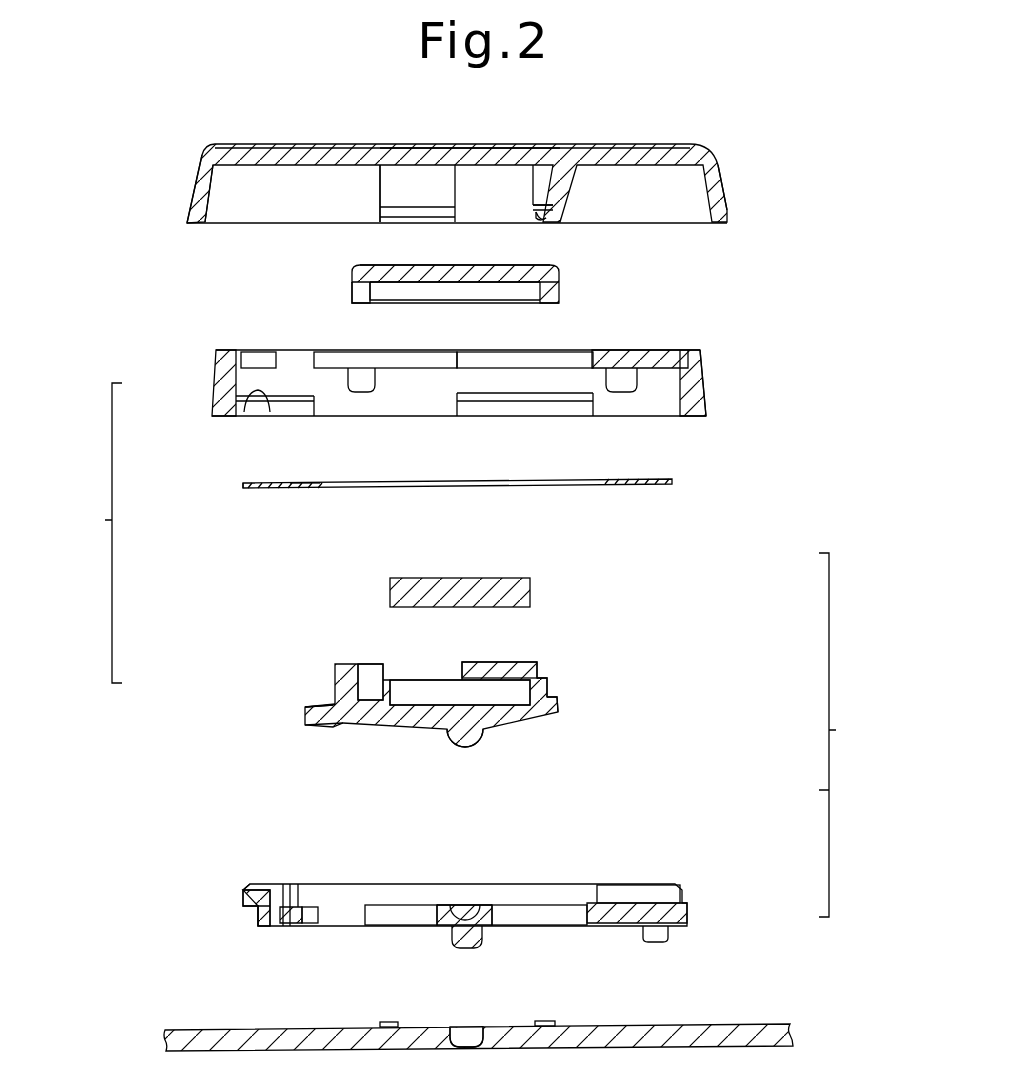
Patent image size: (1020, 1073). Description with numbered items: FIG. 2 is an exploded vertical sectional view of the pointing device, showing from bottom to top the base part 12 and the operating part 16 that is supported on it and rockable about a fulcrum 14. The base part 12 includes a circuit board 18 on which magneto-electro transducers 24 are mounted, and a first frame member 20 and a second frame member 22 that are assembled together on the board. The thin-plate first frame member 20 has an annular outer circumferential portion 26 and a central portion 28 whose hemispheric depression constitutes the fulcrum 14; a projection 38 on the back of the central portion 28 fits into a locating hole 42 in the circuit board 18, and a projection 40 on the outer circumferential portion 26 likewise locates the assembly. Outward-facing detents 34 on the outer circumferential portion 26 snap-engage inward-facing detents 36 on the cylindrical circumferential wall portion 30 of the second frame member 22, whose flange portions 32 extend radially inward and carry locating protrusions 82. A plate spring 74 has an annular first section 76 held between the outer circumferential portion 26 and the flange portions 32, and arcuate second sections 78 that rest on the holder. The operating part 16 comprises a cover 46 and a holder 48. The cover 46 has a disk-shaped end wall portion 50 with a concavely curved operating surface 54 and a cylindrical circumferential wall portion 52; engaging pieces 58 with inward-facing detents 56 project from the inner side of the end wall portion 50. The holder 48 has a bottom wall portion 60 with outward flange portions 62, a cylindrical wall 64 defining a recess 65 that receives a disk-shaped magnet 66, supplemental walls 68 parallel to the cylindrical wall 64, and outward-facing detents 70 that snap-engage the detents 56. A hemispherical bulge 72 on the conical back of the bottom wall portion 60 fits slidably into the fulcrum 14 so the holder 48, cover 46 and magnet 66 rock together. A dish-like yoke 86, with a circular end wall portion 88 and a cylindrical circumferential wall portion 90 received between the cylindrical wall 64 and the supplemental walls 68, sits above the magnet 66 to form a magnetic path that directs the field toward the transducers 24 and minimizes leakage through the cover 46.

The base part 12 is at (843, 735).
The fulcrum 14 is at (468, 907).
The operating part 16 is at (98, 533).
The circuit board 18 is at (738, 1024).
The first frame member 20 is at (665, 880).
The second frame member 22 is at (712, 400).
The magneto-electro transducers 24 is at (382, 1022).
The outer circumferential portion 26 is at (262, 887).
The central portion 28 is at (452, 907).
The circumferential wall portion 30 is at (222, 395).
The flange portions 32 is at (346, 356).
The detents 34 is at (243, 906).
The detents 36 is at (262, 394).
The projection 38 is at (484, 937).
The projection 40 is at (670, 937).
The locating hole 42 is at (467, 1030).
The cover 46 is at (190, 190).
The holder 48 is at (333, 690).
The end wall portion 50 is at (615, 144).
The circumferential wall portion 52 is at (728, 185).
The operating surface 54 is at (485, 146).
The detents 56 is at (548, 218).
The engaging pieces 58 is at (378, 190).
The bottom wall portion 60 is at (497, 730).
The flange portions 62 is at (308, 718).
The cylindrical wall 64 is at (552, 688).
The recess 65 is at (445, 702).
The magnet 66 is at (508, 577).
The supplemental walls 68 is at (346, 664).
The detents 70 is at (561, 707).
The bulge 72 is at (447, 744).
The plate spring 74 is at (640, 488).
The first section 76 is at (254, 489).
The second sections 78 is at (305, 489).
The locating protrusions 82 is at (361, 388).
The yoke 86 is at (568, 283).
The end wall portion 88 is at (440, 266).
The circumferential wall portion 90 is at (352, 291).